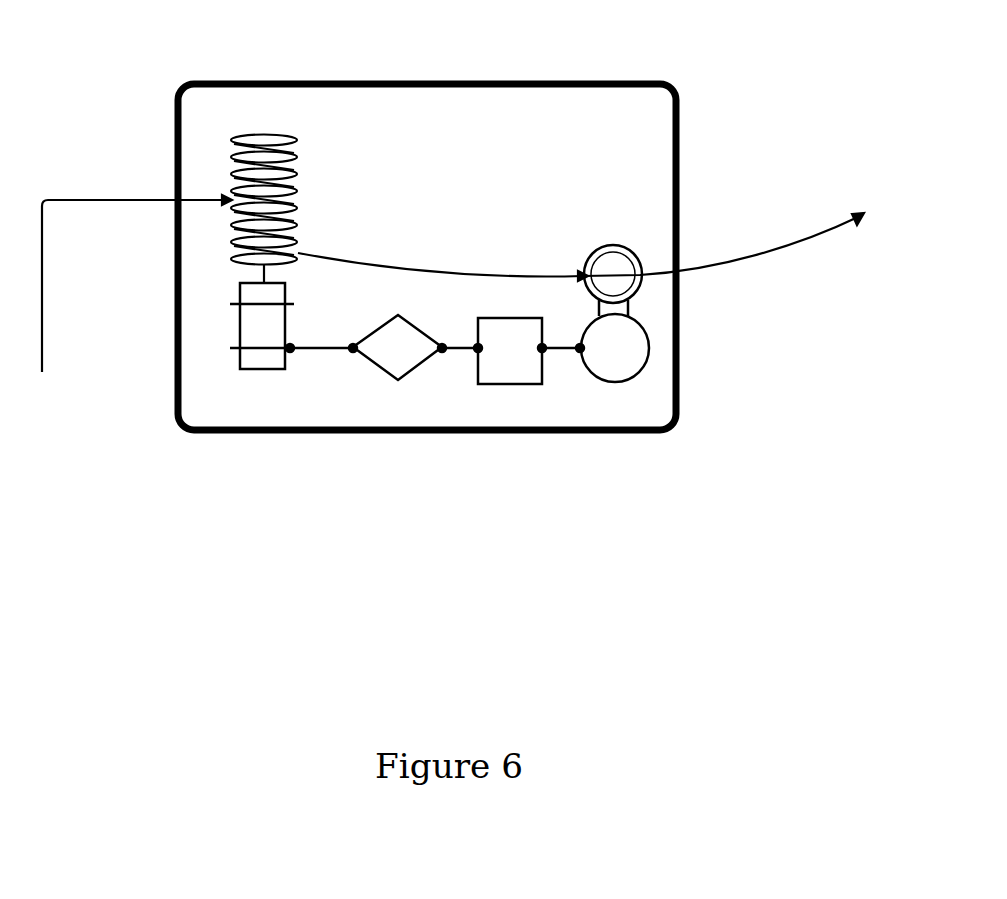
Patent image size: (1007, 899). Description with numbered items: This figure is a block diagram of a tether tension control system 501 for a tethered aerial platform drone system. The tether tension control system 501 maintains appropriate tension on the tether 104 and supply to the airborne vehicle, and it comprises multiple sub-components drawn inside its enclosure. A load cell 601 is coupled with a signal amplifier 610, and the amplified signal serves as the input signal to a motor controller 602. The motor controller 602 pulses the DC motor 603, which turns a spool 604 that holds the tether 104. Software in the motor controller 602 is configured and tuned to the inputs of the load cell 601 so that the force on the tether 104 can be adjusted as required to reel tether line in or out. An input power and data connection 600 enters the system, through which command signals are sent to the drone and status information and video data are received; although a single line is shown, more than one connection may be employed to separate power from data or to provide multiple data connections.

The tether tension control system 501 is at (588, 128).
The spool 604 is at (257, 135).
The input power and data connection 600 is at (240, 233).
The DC motor 603 is at (268, 352).
The motor controller 602 is at (393, 355).
The signal amplifier 610 is at (513, 348).
The load cell 601 is at (612, 345).
The tether 104 is at (753, 257).